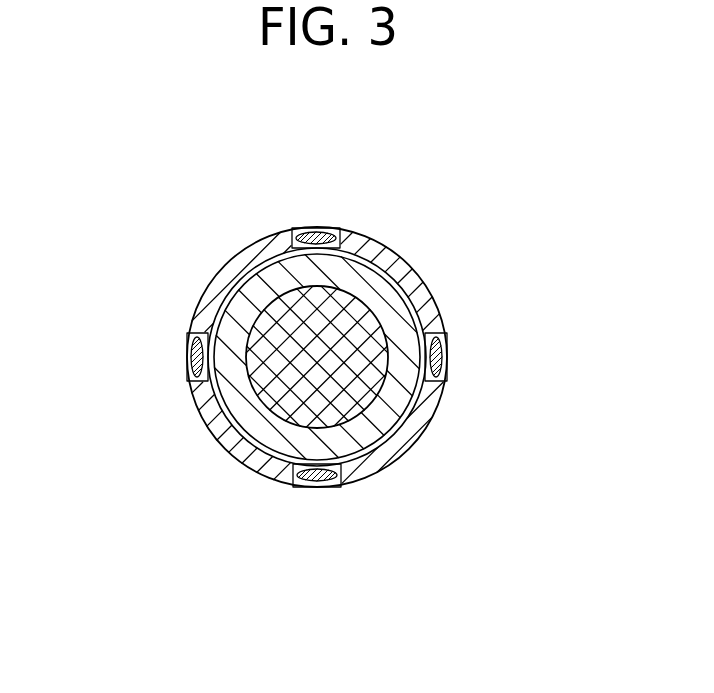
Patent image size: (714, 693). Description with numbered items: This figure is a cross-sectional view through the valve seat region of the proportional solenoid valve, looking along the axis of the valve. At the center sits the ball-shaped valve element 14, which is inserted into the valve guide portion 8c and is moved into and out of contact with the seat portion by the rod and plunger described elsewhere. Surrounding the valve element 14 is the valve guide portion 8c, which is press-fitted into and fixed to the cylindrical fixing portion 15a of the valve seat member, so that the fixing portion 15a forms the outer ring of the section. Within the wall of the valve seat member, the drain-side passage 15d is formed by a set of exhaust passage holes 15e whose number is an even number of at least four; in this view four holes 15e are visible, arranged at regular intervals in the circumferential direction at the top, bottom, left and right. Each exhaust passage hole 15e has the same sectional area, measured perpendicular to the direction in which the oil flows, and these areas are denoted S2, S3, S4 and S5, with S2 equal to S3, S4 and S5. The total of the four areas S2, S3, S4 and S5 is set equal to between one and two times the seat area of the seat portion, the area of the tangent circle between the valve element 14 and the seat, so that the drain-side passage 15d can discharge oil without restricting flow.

The valve element 14 is at (270, 300).
The valve guide portion 8c is at (388, 305).
The cylindrical fixing portion 15a is at (437, 420).
The drain-side passage 15d is at (181, 337).
The exhaust passage hole 15e is at (333, 241).
The sectional area of exhaust passage hole S2 is at (189, 369).
The sectional area of exhaust passage hole S3 is at (343, 486).
The sectional area of exhaust passage hole S4 is at (440, 356).
The sectional area of exhaust passage hole S5 is at (343, 243).